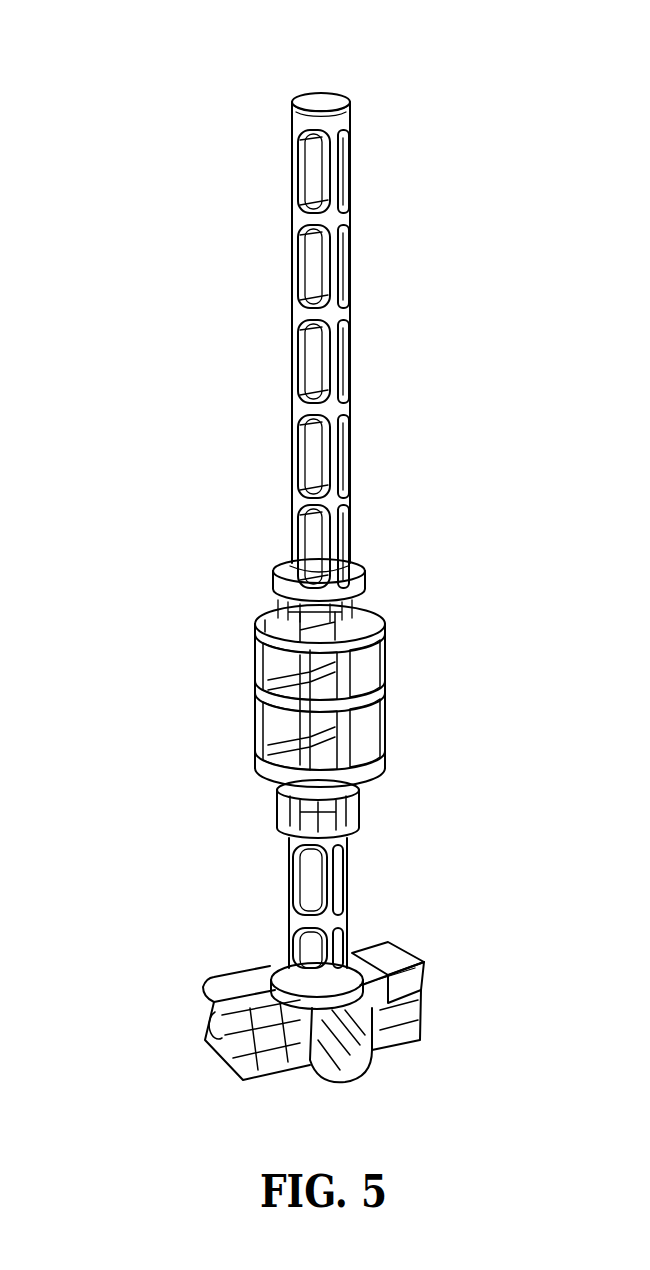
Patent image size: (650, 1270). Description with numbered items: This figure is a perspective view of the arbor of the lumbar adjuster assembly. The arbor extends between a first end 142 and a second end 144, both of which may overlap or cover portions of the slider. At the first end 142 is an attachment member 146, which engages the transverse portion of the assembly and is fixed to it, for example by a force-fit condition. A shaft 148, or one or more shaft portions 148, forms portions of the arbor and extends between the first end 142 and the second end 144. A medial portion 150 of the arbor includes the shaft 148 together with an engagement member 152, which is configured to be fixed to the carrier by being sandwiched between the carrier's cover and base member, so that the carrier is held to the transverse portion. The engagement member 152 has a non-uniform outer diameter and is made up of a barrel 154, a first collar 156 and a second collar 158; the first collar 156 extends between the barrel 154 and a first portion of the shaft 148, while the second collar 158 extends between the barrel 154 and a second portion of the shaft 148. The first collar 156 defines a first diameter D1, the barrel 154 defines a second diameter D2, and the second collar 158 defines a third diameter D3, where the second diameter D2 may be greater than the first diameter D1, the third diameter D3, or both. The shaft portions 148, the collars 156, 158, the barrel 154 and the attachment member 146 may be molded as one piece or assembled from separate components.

The first end 142 is at (420, 1040).
The second end 144 is at (318, 104).
The attachment member 146 is at (388, 960).
The shaft 148 is at (340, 268).
The medial portion 150 is at (93, 82).
The engagement member 152 is at (425, 561).
The barrel 154 is at (255, 683).
The first collar 156 is at (285, 832).
The second collar 158 is at (350, 568).
The first diameter D1 is at (277, 800).
The second diameter D2 is at (260, 730).
The third diameter D3 is at (270, 598).